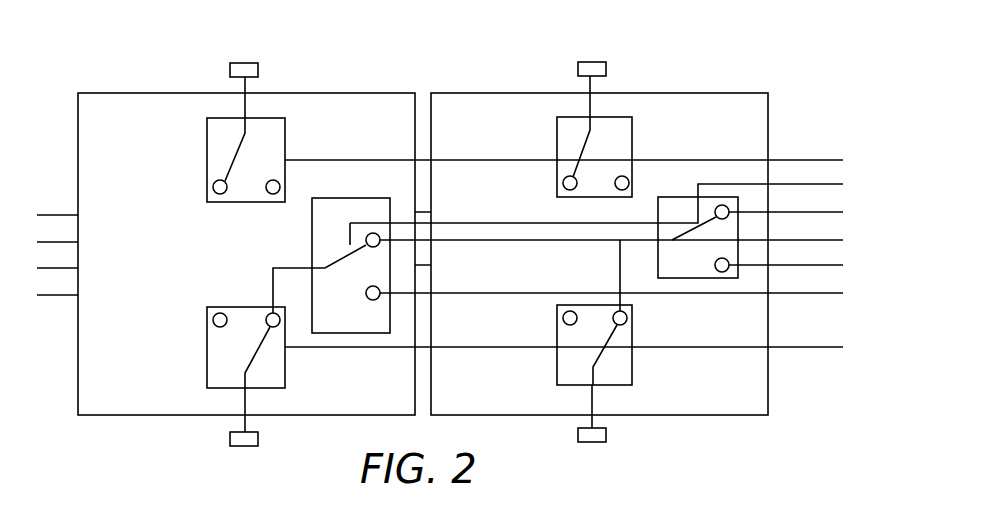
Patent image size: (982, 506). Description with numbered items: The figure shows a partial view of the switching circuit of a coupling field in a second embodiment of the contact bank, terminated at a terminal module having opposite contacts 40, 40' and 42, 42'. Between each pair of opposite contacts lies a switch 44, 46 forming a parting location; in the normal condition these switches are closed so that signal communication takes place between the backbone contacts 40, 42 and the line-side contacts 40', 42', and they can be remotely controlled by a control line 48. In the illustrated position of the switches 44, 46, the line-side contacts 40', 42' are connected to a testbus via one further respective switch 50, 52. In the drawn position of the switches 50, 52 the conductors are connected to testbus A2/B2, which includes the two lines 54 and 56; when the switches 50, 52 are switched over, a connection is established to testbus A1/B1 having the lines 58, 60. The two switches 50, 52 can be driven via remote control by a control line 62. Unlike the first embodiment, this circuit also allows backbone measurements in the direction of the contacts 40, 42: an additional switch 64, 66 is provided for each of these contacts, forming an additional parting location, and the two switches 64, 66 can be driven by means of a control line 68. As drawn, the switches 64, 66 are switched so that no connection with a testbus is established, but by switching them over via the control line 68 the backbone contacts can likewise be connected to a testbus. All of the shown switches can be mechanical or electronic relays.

The backbone contact 40 is at (244, 69).
The backbone contact 42 is at (591, 69).
The line-side contact 40' is at (243, 442).
The line-side contact 42' is at (592, 439).
The additional switch 64 is at (277, 150).
The additional switch 66 is at (626, 151).
The switch 44 is at (248, 356).
The switch 46 is at (586, 376).
The further switch 50 is at (355, 321).
The further switch 52 is at (696, 274).
The testbus line 54 is at (800, 212).
The testbus line 56 is at (626, 269).
The testbus line 58 is at (800, 265).
The testbus line 60 is at (626, 294).
The control line 62 is at (611, 197).
The control line 68 is at (578, 160).
The control line 48 is at (578, 347).